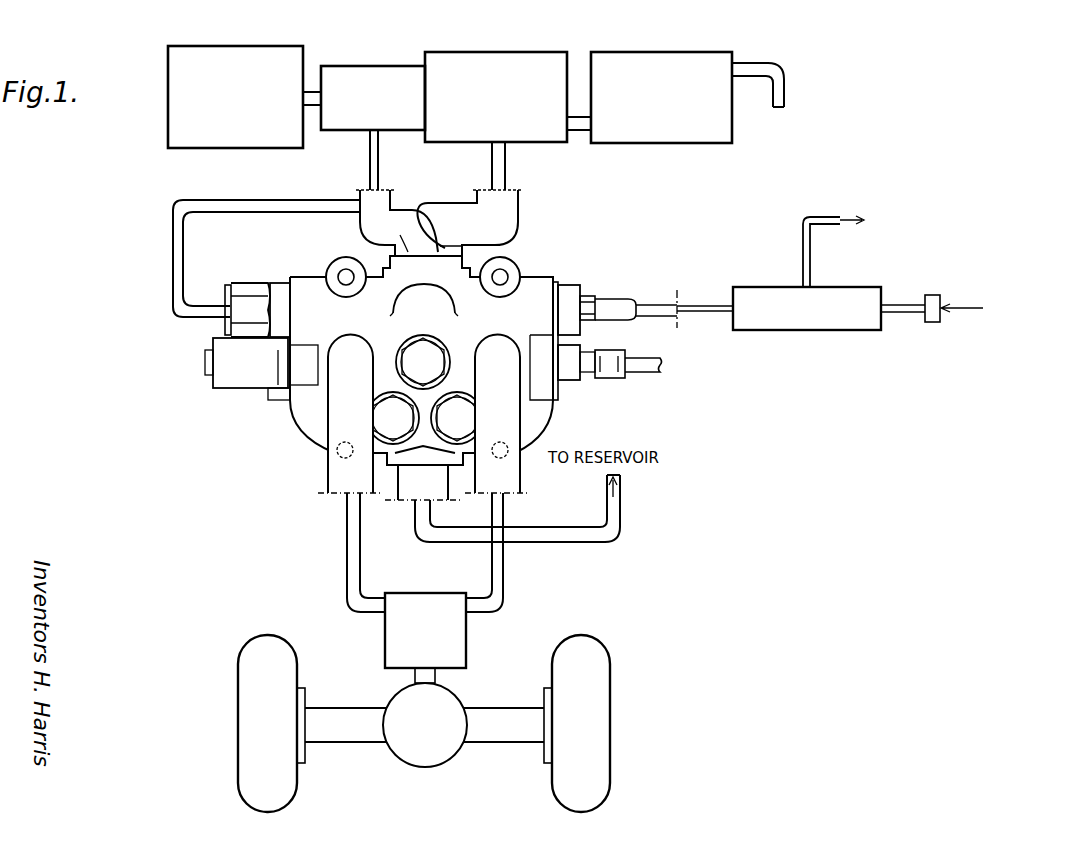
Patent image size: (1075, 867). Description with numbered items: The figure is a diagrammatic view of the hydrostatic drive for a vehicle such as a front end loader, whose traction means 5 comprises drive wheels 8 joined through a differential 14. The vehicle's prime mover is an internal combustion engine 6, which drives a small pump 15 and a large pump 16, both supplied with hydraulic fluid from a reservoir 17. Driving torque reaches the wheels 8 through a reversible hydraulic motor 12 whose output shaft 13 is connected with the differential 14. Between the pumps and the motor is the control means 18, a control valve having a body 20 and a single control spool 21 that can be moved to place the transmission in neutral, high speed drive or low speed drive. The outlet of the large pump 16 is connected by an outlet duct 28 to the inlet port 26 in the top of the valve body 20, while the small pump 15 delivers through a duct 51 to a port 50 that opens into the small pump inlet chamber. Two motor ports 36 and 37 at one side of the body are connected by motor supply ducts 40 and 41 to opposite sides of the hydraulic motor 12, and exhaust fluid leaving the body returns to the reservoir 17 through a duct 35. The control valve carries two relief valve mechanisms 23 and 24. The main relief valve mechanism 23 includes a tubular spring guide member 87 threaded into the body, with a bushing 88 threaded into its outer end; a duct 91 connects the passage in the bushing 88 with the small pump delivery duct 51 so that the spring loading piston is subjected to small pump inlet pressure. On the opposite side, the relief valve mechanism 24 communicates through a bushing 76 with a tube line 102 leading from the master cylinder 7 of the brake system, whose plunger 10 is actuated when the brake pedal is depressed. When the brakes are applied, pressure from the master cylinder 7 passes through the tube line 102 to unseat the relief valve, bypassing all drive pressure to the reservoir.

The traction means 5 is at (338, 673).
The internal combustion engine 6 is at (168, 67).
The master cylinder 7 is at (836, 290).
The drive wheels 8 is at (250, 677).
The plunger 10 is at (932, 295).
The reversible hydraulic motor 12 is at (428, 596).
The output shaft 13 is at (433, 676).
The differential 14 is at (440, 748).
The small pump 15 is at (381, 72).
The large pump 16 is at (505, 62).
The reservoir 17 is at (667, 66).
The control means 18 is at (285, 432).
The valve body 20 is at (534, 287).
The control spool 21 is at (567, 372).
The relief valve mechanism 23 is at (285, 272).
The relief valve mechanism 24 is at (587, 292).
The inlet port 26 is at (447, 250).
The outlet duct 28 is at (508, 205).
The duct 35 is at (760, 66).
The motor port 36 is at (360, 345).
The motor port 37 is at (505, 345).
The motor supply duct 40 is at (345, 482).
The motor supply duct 41 is at (500, 481).
The port 50 is at (408, 250).
The duct 51 is at (385, 194).
The bushing 76 is at (560, 290).
The tubular spring guide member 87 is at (255, 292).
The bushing 88 is at (229, 292).
The duct 91 is at (175, 262).
The tube line 102 is at (648, 300).